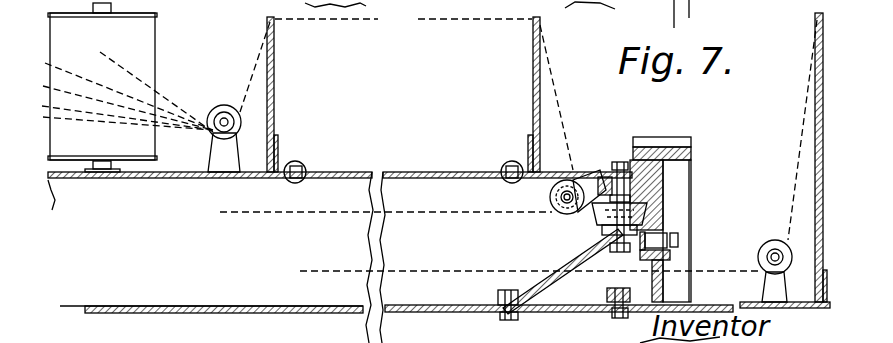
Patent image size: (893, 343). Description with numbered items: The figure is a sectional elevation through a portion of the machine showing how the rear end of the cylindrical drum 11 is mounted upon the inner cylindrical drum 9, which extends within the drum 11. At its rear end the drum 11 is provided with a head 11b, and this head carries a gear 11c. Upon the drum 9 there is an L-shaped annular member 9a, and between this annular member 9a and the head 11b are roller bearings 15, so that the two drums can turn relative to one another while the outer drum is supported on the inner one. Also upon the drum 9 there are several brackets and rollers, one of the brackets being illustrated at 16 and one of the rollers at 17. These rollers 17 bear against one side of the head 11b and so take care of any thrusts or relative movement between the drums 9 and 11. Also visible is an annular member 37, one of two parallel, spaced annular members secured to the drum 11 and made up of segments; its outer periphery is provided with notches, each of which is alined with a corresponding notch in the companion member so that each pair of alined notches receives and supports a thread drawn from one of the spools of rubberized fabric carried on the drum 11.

The annular member 37 is at (275, 88).
The cylindrical drum 11 is at (560, 172).
The head 11b is at (625, 162).
The gear 11c is at (679, 132).
The roller bearings 15 is at (692, 222).
The bracket 16 is at (575, 252).
The roller 17 is at (596, 218).
The cylindrical drum 9 is at (467, 305).
The L-shaped annular member 9a is at (665, 283).